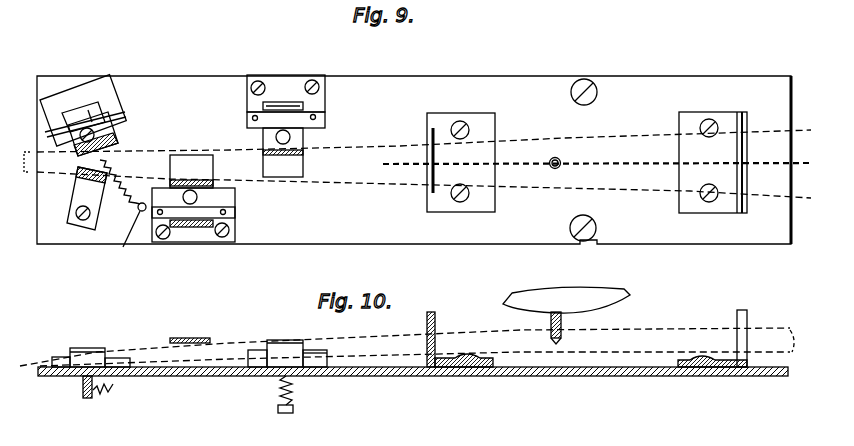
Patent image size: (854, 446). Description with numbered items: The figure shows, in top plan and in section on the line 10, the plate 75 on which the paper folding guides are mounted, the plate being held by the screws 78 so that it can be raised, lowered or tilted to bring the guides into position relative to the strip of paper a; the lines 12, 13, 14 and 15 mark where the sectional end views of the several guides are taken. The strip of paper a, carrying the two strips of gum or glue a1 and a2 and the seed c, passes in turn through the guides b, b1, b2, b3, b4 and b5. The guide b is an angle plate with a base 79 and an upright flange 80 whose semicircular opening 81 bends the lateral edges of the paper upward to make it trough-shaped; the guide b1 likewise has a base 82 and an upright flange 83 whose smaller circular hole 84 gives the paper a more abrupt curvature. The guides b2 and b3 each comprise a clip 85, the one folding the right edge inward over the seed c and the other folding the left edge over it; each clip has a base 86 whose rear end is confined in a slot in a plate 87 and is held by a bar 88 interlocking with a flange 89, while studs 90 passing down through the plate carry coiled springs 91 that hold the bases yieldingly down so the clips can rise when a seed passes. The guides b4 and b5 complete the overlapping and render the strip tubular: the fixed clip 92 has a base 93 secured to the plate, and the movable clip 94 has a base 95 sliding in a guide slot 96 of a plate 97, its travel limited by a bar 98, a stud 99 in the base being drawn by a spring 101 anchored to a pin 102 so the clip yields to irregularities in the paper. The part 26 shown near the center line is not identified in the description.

In FIG. 9, the section line 10— 10 is at (418, 160).
In FIG. 9, the section line 12— 12 is at (507, 75).
In FIG. 9, the section line 13— 13 is at (285, 75).
In FIG. 9, the section line 14— 14 is at (191, 67).
In FIG. 9, the section line 15— 15 is at (67, 52).
In FIG. 10, the section line 15— 15 is at (580, 285).
In FIG. 9, the stud 26 is at (562, 165).
In FIG. 10, the stud 26 is at (563, 320).
In FIG. 9, the plate 75 is at (407, 238).
In FIG. 10, the plate 75 is at (617, 377).
In FIG. 9, the screws 78 is at (586, 86).
In FIG. 9, the base 79 is at (715, 207).
In FIG. 10, the base 79 is at (712, 370).
In FIG. 9, the flange 80 is at (748, 118).
In FIG. 10, the flange 80 is at (760, 308).
In FIG. 9, the semicircular opening 81 is at (748, 193).
In FIG. 10, the semicircular opening 81 is at (737, 318).
In FIG. 9, the base 82 is at (486, 203).
In FIG. 10, the base 82 is at (490, 368).
In FIG. 9, the upright flange 83 is at (430, 187).
In FIG. 10, the upright flange 83 is at (433, 312).
In FIG. 10, the circular hole 84 is at (427, 318).
In FIG. 9, the clip 85 is at (180, 161).
In FIG. 10, the clip 85 is at (314, 350).
In FIG. 9, the base 86 is at (273, 128).
In FIG. 9, the plate 87 is at (228, 237).
In FIG. 10, the plate 87 is at (322, 363).
In FIG. 9, the bars 88 is at (233, 213).
In FIG. 10, the bars 88 is at (258, 352).
In FIG. 9, the flanges 89 is at (267, 106).
In FIG. 9, the studs or bolts 90 is at (300, 138).
In FIG. 10, the studs or bolts 90 is at (280, 398).
In FIG. 10, the coiled springs 91 is at (293, 401).
In FIG. 9, the clip 92 is at (106, 188).
In FIG. 9, the base 93 is at (72, 210).
In FIG. 9, the clip 94 is at (127, 125).
In FIG. 10, the clip 94 is at (97, 348).
In FIG. 9, the base 95 is at (63, 116).
In FIG. 9, the guide slot 96 is at (88, 110).
In FIG. 9, the plate 97 is at (87, 100).
In FIG. 10, the plate 97 is at (62, 357).
In FIG. 9, the bar 98 is at (118, 117).
In FIG. 9, the stud 99 is at (62, 127).
In FIG. 9, the spring 101 is at (115, 136).
In FIG. 10, the spring 101 is at (132, 421).
In FIG. 9, the pin 102 is at (153, 272).
In FIG. 9, the strip of paper a is at (537, 149).
In FIG. 10, the strip of paper a is at (653, 329).
In FIG. 9, the strip of gum or glue a1 is at (626, 162).
In FIG. 9, the strip of gum or glue a2 is at (626, 189).
In FIG. 9, the guide b is at (716, 100).
In FIG. 10, the guide b is at (756, 294).
In FIG. 9, the guide b1 is at (465, 96).
In FIG. 10, the guide b1 is at (460, 313).
In FIG. 9, the guide b2 is at (348, 98).
In FIG. 10, the guide b2 is at (285, 339).
In FIG. 9, the guide b3 is at (267, 218).
In FIG. 10, the guide b3 is at (190, 327).
In FIG. 9, the guide b4 is at (50, 205).
In FIG. 9, the guide b5 is at (144, 100).
In FIG. 10, the guide b5 is at (87, 341).
In FIG. 9, the seed c is at (478, 162).
In FIG. 10, the seed c is at (287, 353).